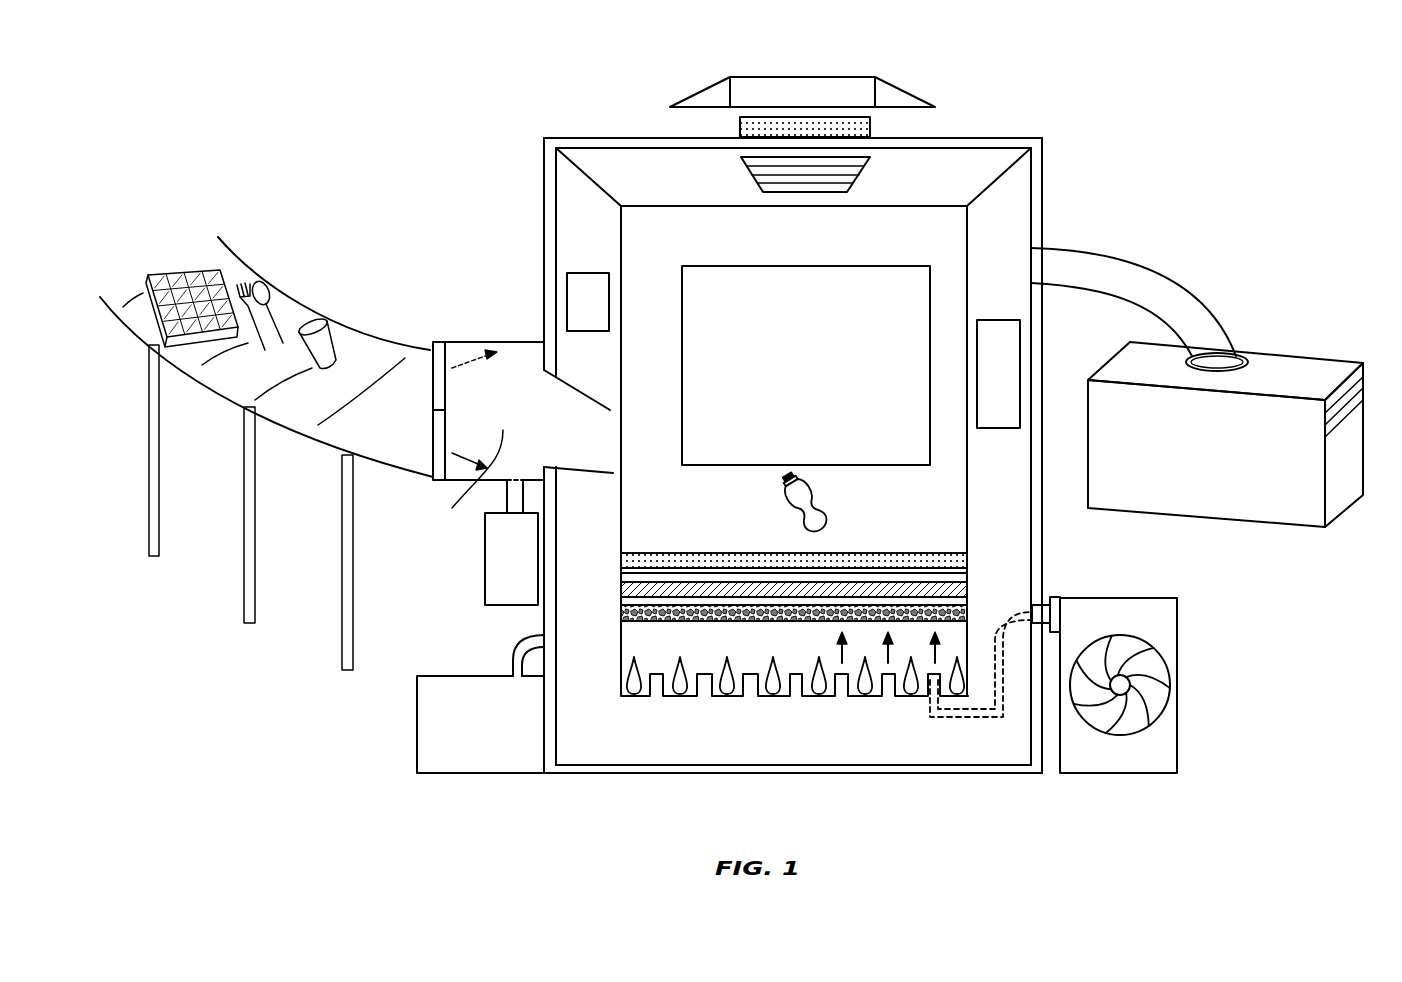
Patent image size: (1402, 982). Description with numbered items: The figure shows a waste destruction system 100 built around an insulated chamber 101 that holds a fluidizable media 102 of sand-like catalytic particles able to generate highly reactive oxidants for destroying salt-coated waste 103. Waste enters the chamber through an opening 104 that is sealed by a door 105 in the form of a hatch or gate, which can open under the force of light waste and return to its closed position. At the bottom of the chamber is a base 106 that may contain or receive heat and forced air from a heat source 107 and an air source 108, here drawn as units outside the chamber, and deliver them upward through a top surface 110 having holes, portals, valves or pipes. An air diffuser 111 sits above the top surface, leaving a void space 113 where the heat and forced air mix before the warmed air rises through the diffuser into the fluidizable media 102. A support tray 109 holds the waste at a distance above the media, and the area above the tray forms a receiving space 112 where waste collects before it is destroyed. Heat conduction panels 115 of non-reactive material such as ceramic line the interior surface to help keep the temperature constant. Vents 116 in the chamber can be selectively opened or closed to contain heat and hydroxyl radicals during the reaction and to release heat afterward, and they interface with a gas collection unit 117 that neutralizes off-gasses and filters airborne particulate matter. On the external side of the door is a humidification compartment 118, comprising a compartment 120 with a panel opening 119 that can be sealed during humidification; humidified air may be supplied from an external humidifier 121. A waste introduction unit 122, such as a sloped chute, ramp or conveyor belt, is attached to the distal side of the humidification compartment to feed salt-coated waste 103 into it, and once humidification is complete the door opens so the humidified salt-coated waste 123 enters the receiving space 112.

The waste destruction system 100 is at (404, 98).
The insulated chamber 101 is at (1032, 138).
The fluidizable media 102 is at (970, 587).
The salt-coated waste 103 is at (320, 316).
The opening 104 is at (575, 425).
The door 105 is at (583, 392).
The base 106 is at (655, 755).
The heat source 107 is at (447, 755).
The air source 108 is at (1165, 736).
The support tray 109 is at (975, 563).
The top surface 110 is at (627, 694).
The air diffuser 111 is at (970, 615).
The receiving space 112 is at (953, 268).
The void space 113 is at (635, 638).
The heat conduction panels 115 is at (1022, 350).
The vents 116 is at (871, 128).
The gas collection unit 117 is at (1305, 367).
The humidification compartment 118 is at (466, 486).
The panel opening 119 is at (433, 427).
The compartment 120 is at (457, 350).
The external humidifier 121 is at (490, 577).
The waste introduction unit 122 is at (328, 440).
The humidified salt-coated waste 123 is at (823, 500).